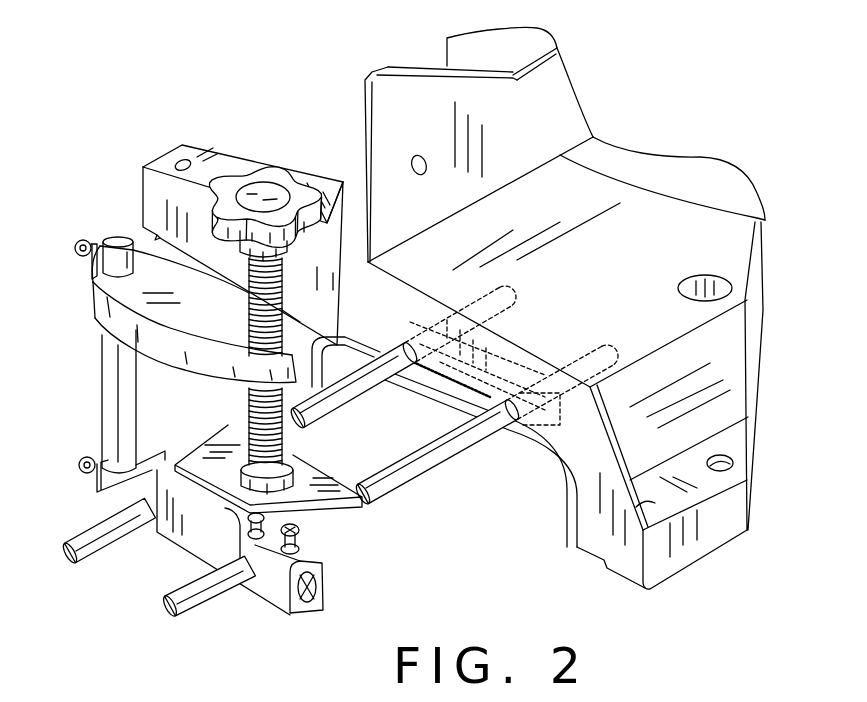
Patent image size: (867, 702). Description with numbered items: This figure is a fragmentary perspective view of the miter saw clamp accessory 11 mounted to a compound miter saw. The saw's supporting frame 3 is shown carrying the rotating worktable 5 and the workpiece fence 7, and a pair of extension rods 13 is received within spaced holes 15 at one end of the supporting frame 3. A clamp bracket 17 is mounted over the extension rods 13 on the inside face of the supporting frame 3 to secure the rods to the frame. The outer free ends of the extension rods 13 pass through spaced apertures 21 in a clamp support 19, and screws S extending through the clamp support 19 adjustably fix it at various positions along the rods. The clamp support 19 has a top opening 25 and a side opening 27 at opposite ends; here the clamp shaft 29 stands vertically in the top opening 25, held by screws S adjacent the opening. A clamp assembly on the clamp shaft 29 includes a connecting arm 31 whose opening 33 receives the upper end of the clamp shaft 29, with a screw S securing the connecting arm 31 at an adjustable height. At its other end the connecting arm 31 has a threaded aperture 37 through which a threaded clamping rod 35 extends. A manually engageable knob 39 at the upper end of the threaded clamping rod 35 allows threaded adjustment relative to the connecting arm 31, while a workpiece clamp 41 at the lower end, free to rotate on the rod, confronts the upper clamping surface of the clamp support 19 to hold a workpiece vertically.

The supporting frame 3 is at (586, 308).
The rotating worktable 5 is at (708, 180).
The workpiece fence 7 is at (530, 113).
The miter saw clamp accessory 11 is at (147, 138).
The extension rods 13 is at (350, 385).
The spaced holes 15 is at (372, 280).
The clamp bracket 17 is at (452, 396).
The clamp support 19 is at (183, 527).
The spaced apertures 21 is at (130, 532).
The top opening 25 is at (147, 477).
The side opening 27 is at (317, 597).
The clamp shaft 29 is at (117, 383).
The connecting arm 31 is at (190, 323).
The opening 33 is at (161, 325).
The threaded clamping rod 35 is at (150, 248).
The threaded aperture 37 is at (316, 338).
The knob 39 is at (233, 173).
The workpiece clamp 41 is at (320, 480).
The screws S is at (83, 238).